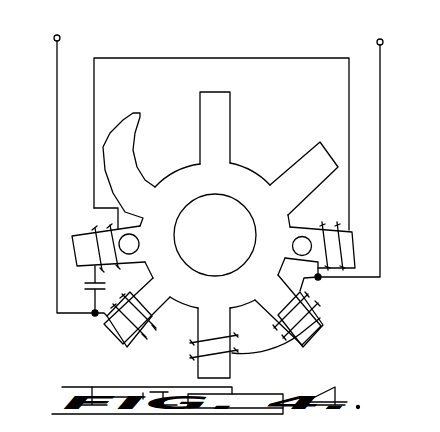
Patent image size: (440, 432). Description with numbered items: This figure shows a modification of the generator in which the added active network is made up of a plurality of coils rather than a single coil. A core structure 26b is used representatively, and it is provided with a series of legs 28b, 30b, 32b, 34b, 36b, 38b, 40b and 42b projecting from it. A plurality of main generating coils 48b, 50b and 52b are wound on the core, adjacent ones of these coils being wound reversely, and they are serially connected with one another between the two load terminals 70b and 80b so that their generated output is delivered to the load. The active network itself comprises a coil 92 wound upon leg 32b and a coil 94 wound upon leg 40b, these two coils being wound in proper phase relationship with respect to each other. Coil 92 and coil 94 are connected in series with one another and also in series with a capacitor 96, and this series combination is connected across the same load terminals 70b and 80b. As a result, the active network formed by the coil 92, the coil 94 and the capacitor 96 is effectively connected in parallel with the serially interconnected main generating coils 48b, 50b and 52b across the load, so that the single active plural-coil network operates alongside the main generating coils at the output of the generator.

The core structure 26b is at (160, 224).
The leg 28b is at (222, 111).
The leg 30b is at (320, 143).
The leg 32b is at (354, 248).
The leg 34b is at (323, 327).
The leg 36b is at (231, 371).
The leg 38b is at (118, 345).
The leg 40b is at (138, 247).
The leg 42b is at (122, 134).
The main generating coil 48b is at (318, 306).
The main generating coil 50b is at (284, 352).
The main generating coil 52b is at (130, 346).
The load terminal 70b is at (383, 42).
The load terminal 80b is at (59, 36).
The coil 92 is at (340, 224).
The coil 94 is at (95, 228).
The capacitor 96 is at (90, 292).